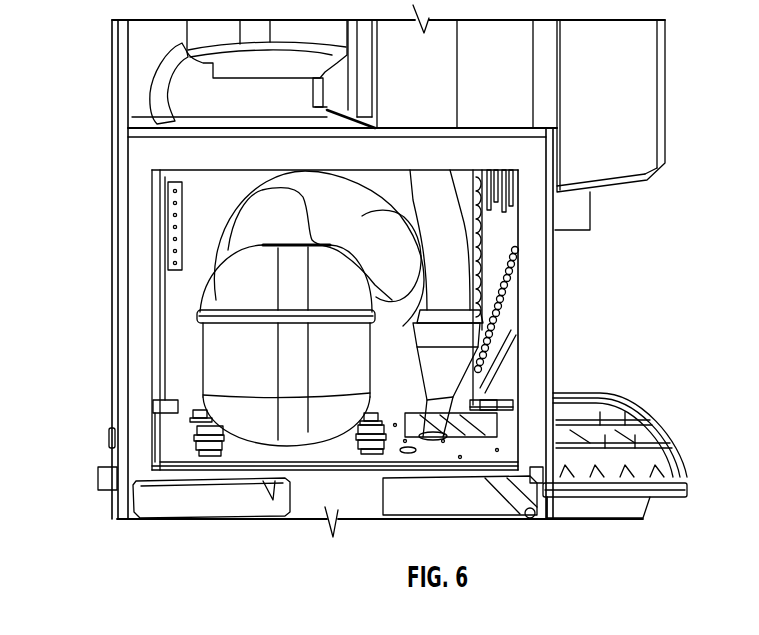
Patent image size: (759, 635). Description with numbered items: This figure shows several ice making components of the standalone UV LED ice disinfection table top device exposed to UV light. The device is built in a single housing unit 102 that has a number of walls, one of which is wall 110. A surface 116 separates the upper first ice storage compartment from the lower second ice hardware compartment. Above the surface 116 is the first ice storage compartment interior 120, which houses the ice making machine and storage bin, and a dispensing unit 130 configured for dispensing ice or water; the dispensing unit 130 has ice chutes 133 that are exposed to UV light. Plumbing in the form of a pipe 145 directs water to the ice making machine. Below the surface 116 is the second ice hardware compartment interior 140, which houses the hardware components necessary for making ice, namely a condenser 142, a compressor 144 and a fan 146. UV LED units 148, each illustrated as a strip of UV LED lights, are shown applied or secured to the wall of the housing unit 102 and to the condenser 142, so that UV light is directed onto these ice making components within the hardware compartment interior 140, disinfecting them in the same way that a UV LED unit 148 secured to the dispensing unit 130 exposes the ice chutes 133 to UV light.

The housing unit 102 is at (507, 233).
The wall 110 is at (140, 122).
The surface 116 is at (99, 362).
The first ice storage compartment interior 120 is at (164, 46).
The dispensing unit 130 is at (647, 178).
The dispensing unit ice chutes 133 is at (580, 218).
The second ice hardware compartment interior 140 is at (184, 449).
The condenser 142 is at (173, 293).
The compressor 144 is at (290, 418).
The pipe 145 is at (155, 78).
The fan 146 is at (257, 192).
The UV LED unit 148 is at (167, 226).